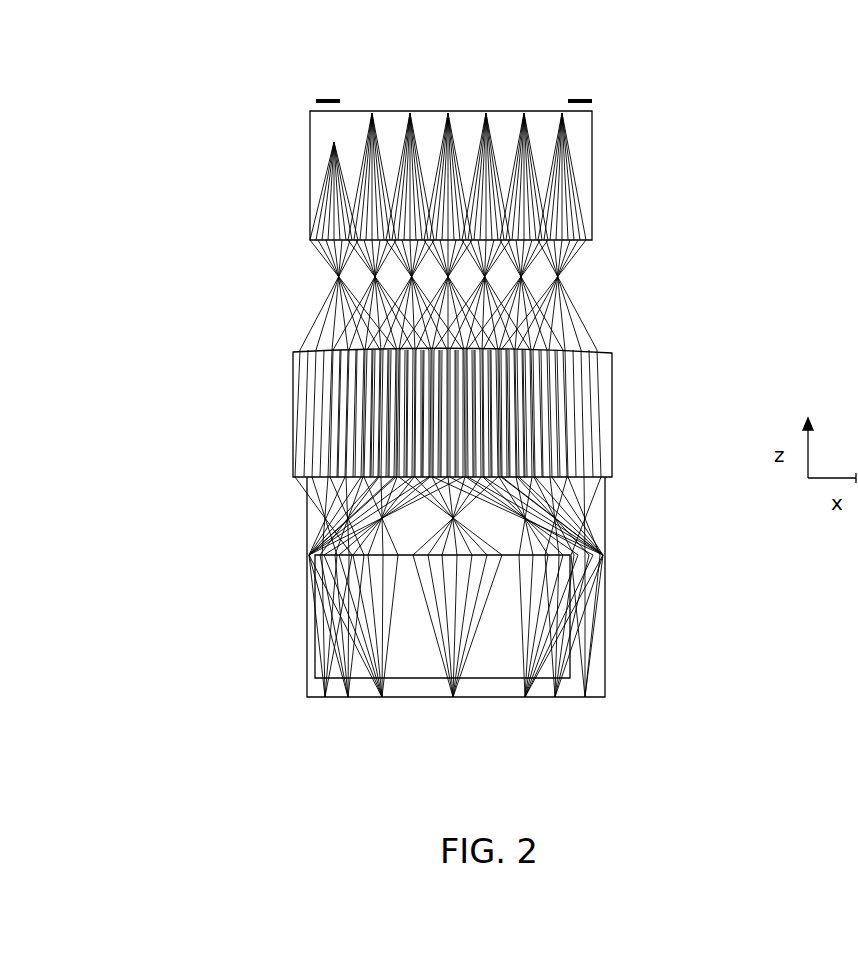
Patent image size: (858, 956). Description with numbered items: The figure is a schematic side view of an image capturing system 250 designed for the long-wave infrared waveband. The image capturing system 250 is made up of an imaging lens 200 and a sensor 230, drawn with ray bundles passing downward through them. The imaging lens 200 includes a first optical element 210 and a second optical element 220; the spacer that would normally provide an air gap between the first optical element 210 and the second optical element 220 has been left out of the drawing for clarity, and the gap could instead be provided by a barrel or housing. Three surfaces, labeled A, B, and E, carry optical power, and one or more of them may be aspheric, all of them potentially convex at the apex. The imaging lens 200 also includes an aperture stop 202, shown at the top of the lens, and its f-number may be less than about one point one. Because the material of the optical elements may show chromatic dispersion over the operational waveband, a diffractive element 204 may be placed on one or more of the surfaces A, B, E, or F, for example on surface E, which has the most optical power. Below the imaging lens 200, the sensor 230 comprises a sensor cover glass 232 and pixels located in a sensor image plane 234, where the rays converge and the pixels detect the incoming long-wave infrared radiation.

The image capturing system 250 is at (429, 38).
The aperture stop 202 is at (312, 95).
The imaging lens 200 is at (207, 137).
The first optical element 210 is at (401, 175).
The second optical element 220 is at (406, 412).
The diffractive element 204 is at (478, 331).
The sensor 230 is at (212, 543).
The sensor cover glass 232 is at (393, 616).
The sensor image plane 234 is at (410, 626).